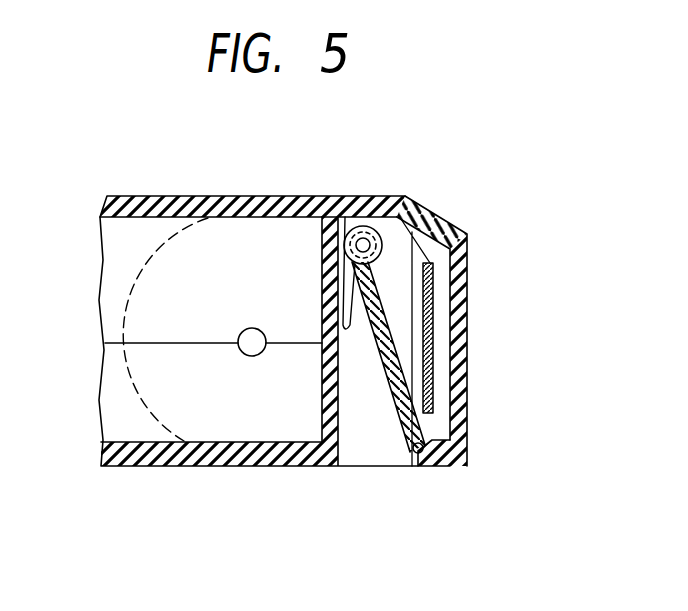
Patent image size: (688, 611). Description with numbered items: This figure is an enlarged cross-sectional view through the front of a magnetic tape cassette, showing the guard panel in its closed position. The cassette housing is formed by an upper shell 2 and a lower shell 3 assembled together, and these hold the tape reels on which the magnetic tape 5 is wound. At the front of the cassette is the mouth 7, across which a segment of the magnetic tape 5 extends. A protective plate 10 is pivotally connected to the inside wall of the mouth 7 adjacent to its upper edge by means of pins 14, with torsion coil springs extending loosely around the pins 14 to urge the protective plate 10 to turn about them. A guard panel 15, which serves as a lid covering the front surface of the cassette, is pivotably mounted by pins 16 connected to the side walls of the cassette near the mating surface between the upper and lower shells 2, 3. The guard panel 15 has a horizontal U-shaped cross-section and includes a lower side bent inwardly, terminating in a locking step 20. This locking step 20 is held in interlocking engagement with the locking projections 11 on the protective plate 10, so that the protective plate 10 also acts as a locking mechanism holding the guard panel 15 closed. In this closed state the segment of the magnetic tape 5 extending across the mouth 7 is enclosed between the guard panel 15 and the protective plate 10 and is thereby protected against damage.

The upper shell 2 is at (143, 196).
The lower shell 3 is at (187, 466).
The magnetic tape 5 is at (440, 283).
The mouth 7 is at (361, 432).
The protective plate 10 is at (415, 360).
The locking projections 11 is at (403, 453).
The pins 14 is at (368, 227).
The guard panel 15 is at (467, 335).
The pins 16 is at (254, 328).
The locking step 20 is at (419, 448).